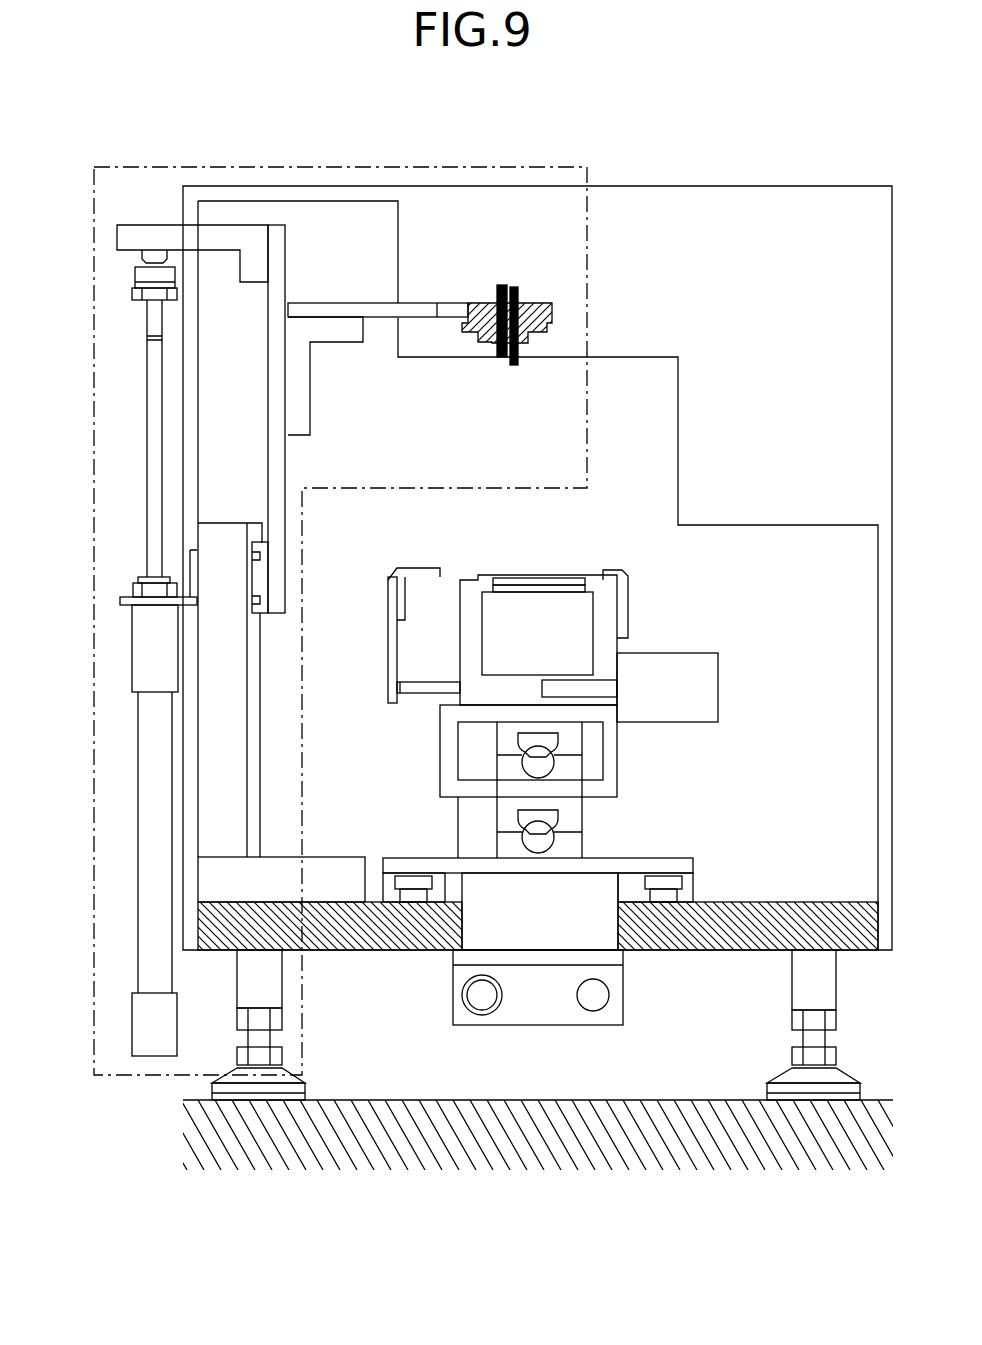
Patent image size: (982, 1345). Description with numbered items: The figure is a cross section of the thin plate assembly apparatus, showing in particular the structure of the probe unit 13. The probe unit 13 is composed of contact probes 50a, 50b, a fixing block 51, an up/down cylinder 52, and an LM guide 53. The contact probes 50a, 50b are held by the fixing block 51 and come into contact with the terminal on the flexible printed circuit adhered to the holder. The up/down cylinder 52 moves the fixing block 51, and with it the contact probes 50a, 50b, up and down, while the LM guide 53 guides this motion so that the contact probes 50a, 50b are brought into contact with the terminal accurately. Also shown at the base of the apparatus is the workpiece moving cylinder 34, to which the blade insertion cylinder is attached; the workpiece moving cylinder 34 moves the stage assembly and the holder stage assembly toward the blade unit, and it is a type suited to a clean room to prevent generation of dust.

The probe unit 13 is at (314, 580).
The fixing block 51 is at (352, 303).
The contact probe 50a is at (515, 287).
The contact probe 50b is at (497, 285).
The LM guide 53 is at (257, 575).
The up/down cylinder 52 is at (136, 738).
The workpiece moving cylinder 34 is at (503, 1025).